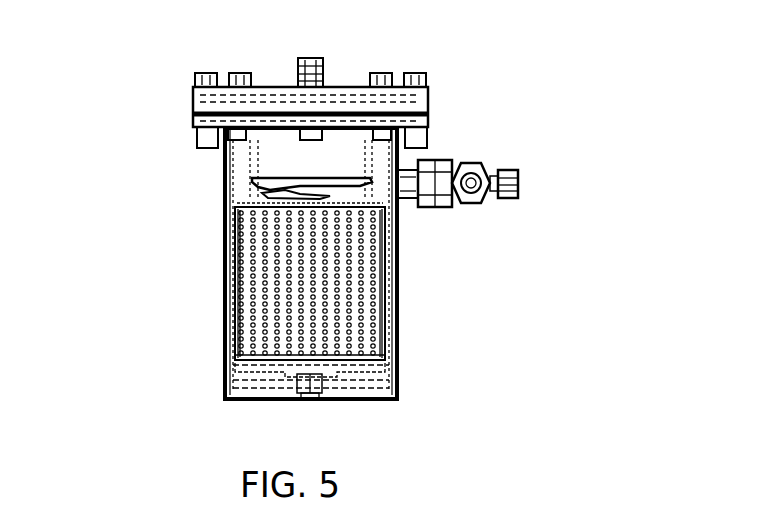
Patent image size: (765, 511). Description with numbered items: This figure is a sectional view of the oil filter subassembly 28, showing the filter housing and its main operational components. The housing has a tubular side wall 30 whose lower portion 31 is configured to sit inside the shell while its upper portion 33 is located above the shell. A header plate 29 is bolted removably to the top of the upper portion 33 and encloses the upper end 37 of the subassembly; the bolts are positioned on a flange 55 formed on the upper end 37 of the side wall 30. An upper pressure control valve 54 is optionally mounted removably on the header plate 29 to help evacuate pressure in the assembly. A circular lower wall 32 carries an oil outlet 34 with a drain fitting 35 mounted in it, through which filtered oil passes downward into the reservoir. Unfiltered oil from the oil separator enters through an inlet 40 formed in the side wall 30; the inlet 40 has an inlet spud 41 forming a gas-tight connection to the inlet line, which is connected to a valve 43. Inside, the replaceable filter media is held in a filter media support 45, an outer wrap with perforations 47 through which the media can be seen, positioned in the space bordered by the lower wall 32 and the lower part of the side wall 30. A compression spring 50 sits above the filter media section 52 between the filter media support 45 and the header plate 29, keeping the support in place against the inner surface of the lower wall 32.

The oil filter subassembly 28 is at (480, 77).
The header plate 29 is at (193, 87).
The tubular side wall 30 is at (225, 268).
The lower portion 31 is at (226, 348).
The lower wall 32 is at (226, 380).
The upper portion 33 is at (225, 160).
The oil outlet 34 is at (310, 387).
The drain fitting 35 is at (317, 398).
The upper end 37 is at (396, 142).
The inlet 40 is at (436, 207).
The inlet spud 41 is at (455, 163).
The valve 43 is at (495, 172).
The filter media support 45 is at (383, 280).
The perforations 47 is at (383, 250).
The compression spring 50 is at (258, 178).
The filter media section 52 is at (383, 345).
The upper pressure control valve 54 is at (300, 70).
The flange 55 is at (193, 118).